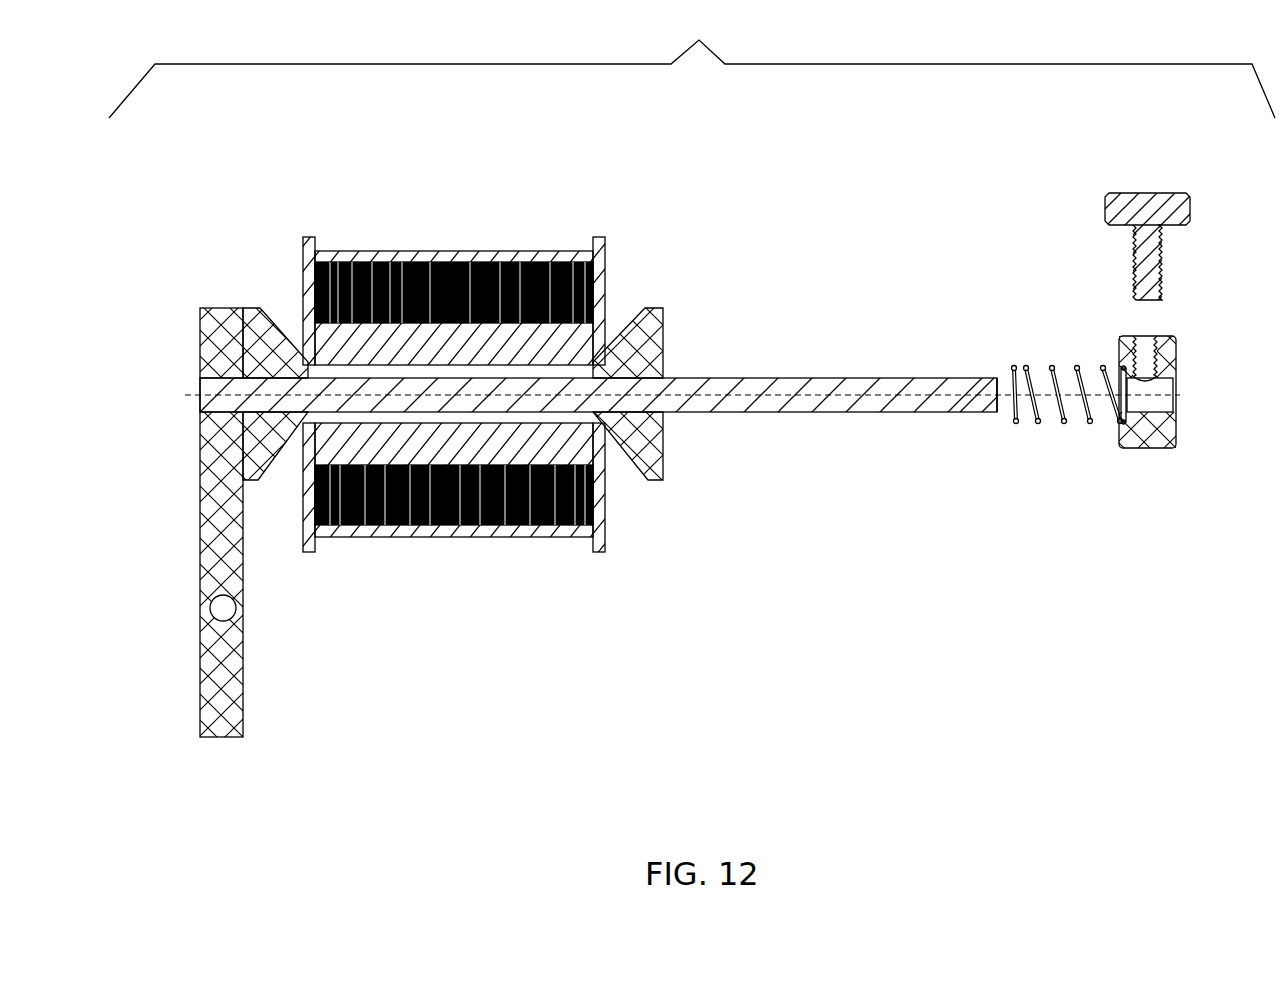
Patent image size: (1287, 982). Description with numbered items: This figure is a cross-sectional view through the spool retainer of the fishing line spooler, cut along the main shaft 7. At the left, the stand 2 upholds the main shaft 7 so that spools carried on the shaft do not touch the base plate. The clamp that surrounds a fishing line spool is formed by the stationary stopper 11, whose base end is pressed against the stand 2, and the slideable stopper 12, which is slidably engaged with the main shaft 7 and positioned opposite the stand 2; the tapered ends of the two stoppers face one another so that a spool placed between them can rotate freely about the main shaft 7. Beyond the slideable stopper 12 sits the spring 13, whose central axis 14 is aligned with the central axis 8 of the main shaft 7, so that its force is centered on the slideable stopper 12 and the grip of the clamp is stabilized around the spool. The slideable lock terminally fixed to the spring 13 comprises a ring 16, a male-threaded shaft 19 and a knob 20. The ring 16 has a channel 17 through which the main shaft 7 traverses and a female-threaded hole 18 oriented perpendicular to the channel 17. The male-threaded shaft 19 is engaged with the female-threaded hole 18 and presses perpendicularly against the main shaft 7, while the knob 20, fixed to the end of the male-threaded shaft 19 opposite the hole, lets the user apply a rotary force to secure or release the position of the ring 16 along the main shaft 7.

The stand 2 is at (222, 312).
The stationary stopper 11 is at (262, 322).
The slideable stopper 12 is at (648, 318).
The main shaft 7 is at (787, 385).
The central axis of the main shaft 8 is at (948, 393).
The spring 14 is at (1038, 393).
The spring 13 is at (1123, 372).
The knob 20 is at (1175, 422).
The female-threaded hole 18 is at (1148, 336).
The channel 17 is at (1178, 395).
The ring 16 is at (1182, 195).
The male-threaded shaft 19 is at (1160, 270).